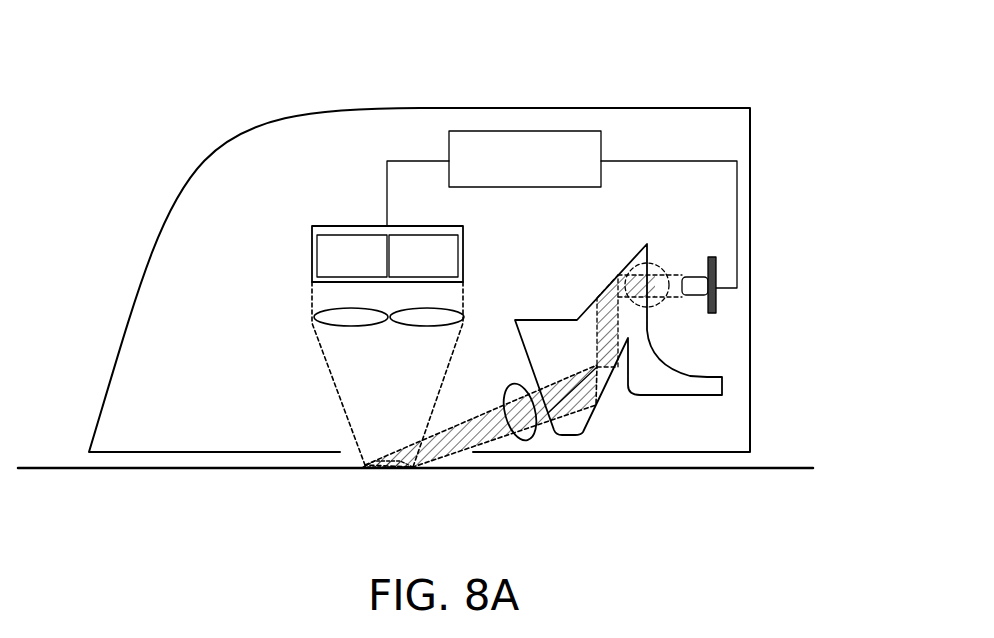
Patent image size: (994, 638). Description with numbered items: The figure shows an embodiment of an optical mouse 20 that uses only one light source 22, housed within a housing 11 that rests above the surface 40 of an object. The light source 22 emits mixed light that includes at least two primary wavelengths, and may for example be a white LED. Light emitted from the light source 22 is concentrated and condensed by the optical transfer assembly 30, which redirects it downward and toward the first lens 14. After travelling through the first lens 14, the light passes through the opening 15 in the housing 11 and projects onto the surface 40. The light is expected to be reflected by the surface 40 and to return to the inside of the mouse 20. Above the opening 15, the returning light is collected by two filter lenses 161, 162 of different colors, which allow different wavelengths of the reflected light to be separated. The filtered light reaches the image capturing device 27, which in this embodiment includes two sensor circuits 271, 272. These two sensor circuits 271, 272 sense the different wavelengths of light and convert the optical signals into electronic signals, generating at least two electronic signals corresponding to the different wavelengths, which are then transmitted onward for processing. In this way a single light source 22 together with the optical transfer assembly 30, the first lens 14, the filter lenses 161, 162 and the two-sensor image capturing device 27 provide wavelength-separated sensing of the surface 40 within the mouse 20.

The mouse 20 is at (760, 68).
The housing 11 is at (632, 108).
The light source 22 is at (691, 276).
The image capturing device 27 is at (352, 266).
The sensor circuit 271 is at (352, 256).
The sensor circuit 272 is at (423, 256).
The optical transfer assembly 30 is at (562, 297).
The first lens 14 is at (508, 385).
The opening 15 is at (345, 438).
The filter lens 161 is at (312, 325).
The filter lens 162 is at (466, 320).
The surface 40 is at (736, 470).